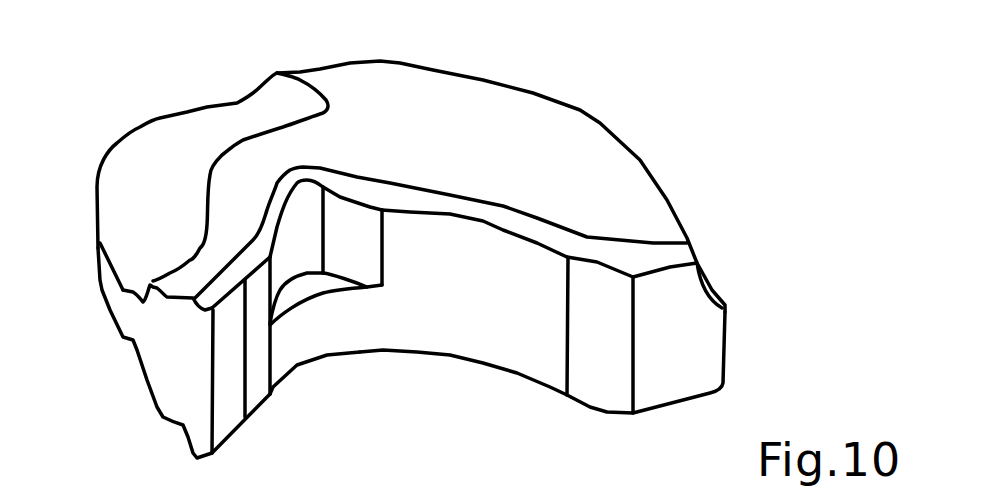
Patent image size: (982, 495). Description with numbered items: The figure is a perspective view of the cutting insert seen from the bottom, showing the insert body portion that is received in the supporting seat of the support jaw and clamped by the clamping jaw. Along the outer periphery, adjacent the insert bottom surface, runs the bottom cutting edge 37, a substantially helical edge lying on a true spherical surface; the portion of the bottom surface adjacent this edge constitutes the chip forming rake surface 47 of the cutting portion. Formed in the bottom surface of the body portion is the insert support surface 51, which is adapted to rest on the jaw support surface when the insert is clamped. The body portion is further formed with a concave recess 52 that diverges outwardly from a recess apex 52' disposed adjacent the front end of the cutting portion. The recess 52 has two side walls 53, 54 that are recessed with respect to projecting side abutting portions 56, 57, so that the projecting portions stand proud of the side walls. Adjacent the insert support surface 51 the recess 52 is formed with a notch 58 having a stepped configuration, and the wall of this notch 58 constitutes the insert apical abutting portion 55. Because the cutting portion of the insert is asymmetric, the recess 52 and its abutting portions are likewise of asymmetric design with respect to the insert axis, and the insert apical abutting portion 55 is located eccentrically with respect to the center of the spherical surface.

The bottom cutting edge 37 is at (98, 177).
The chip forming rake surface 47 is at (157, 150).
The insert support surface 51 is at (602, 152).
The concave recess 52 is at (463, 399).
The recess apex 52' is at (317, 409).
The side wall 53 is at (513, 347).
The side wall 54 is at (257, 385).
The insert apical abutting portion 55 is at (357, 223).
The projecting side abutting portion 56 is at (612, 357).
The projecting side abutting portion 57 is at (223, 360).
The notch 58 is at (310, 217).